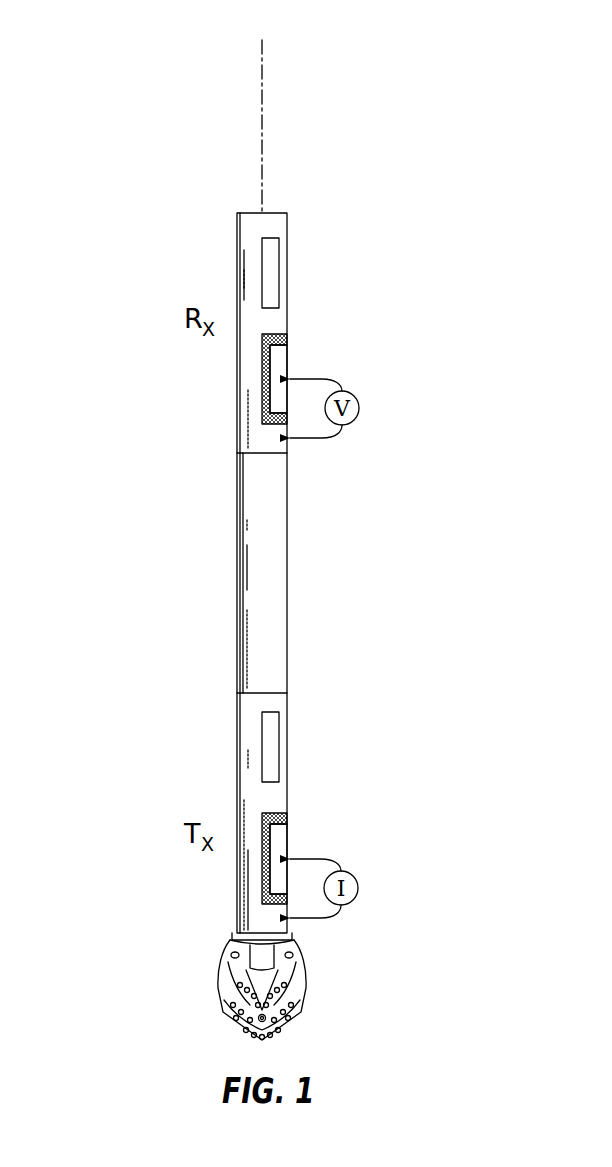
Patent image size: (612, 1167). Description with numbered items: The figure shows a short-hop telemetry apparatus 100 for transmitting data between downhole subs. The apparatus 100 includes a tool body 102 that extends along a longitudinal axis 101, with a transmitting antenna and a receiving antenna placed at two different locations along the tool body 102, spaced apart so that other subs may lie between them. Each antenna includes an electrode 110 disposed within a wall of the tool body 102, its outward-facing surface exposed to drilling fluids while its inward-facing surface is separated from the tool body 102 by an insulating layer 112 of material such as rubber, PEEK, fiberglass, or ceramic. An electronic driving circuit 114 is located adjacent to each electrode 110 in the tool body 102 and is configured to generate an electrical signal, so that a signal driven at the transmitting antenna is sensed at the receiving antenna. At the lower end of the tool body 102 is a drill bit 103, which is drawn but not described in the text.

The short-hop telemetry apparatus 100 is at (163, 64).
The longitudinal axis 101 is at (262, 126).
The tool body 102 is at (246, 572).
The drill bit 103 is at (217, 985).
The electrode 110 is at (281, 367).
The insulating layer 112 is at (284, 337).
The electronic driving circuit 114 is at (313, 253).